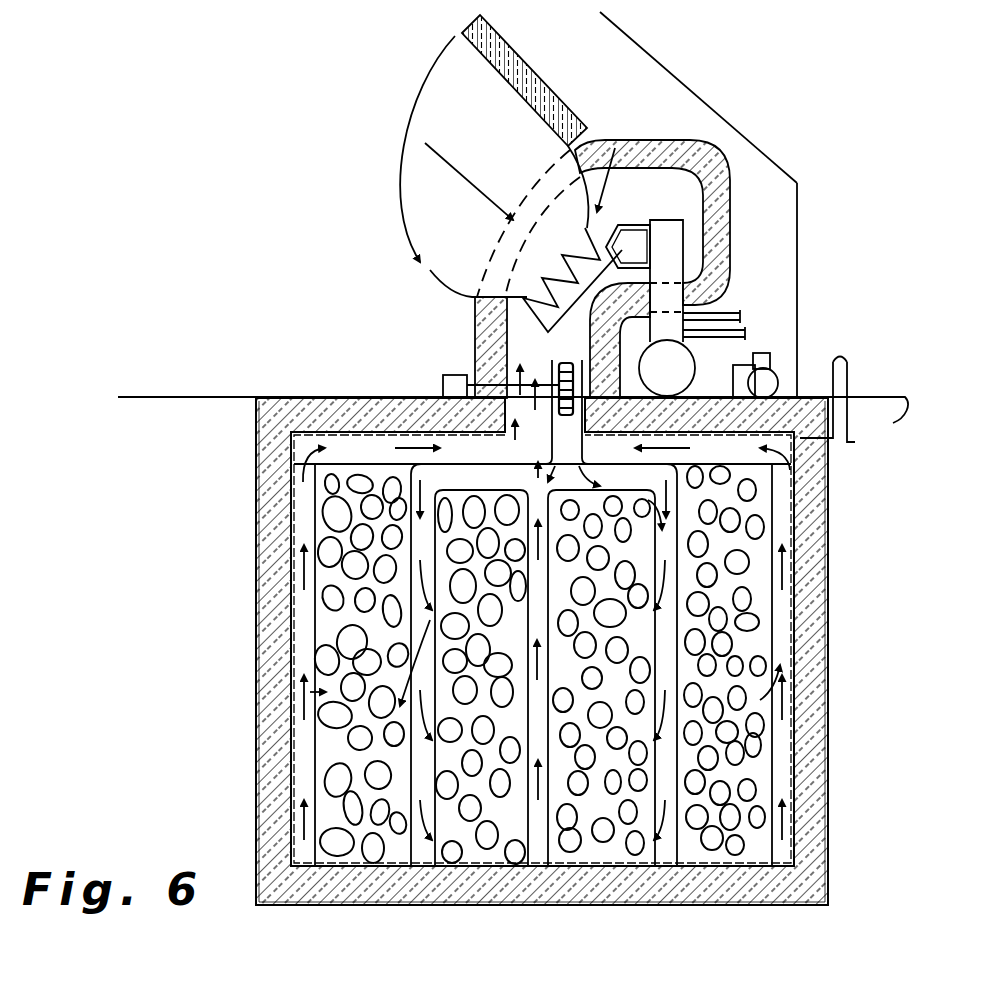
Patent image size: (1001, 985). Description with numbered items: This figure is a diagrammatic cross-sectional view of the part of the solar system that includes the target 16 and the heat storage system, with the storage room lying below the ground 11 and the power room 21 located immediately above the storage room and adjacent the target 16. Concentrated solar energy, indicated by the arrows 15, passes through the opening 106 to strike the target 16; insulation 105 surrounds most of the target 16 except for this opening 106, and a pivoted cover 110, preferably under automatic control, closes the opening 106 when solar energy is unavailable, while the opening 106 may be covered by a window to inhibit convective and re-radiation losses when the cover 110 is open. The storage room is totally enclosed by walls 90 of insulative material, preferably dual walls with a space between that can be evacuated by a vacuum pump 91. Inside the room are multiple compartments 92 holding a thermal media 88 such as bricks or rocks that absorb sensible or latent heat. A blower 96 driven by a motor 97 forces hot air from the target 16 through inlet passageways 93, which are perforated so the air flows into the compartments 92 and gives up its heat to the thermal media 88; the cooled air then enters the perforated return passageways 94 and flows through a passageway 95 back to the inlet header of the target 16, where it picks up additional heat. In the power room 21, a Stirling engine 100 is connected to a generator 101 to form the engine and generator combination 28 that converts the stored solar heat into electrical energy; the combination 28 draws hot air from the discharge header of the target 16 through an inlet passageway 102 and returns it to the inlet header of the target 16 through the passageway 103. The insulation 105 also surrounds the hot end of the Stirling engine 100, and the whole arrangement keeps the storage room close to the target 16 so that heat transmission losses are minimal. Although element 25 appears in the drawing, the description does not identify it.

The ground 11 is at (513, 422).
The arrows indicating transmitted solar energy 15 is at (478, 188).
The target 16 is at (637, 139).
The power room 21 is at (778, 208).
The inclined housing cover 25 is at (706, 80).
The engine and generator combination 28 is at (752, 292).
The thermal media 88 is at (335, 850).
The walls 90 is at (272, 596).
The vacuum pump 91 is at (765, 381).
The compartments 92 is at (388, 858).
The inlet passageways 93 is at (421, 858).
The return passageways 94 is at (546, 500).
The passageway 95 is at (522, 402).
The blower 96 is at (567, 363).
The motor 97 is at (443, 384).
The Stirling engine 100 is at (673, 381).
The generator 101 is at (668, 236).
The inlet passageway 102 is at (629, 252).
The passageway 103 is at (637, 224).
The insulation 105 is at (723, 162).
The opening 106 is at (475, 306).
The pivoted cover 110 is at (583, 58).